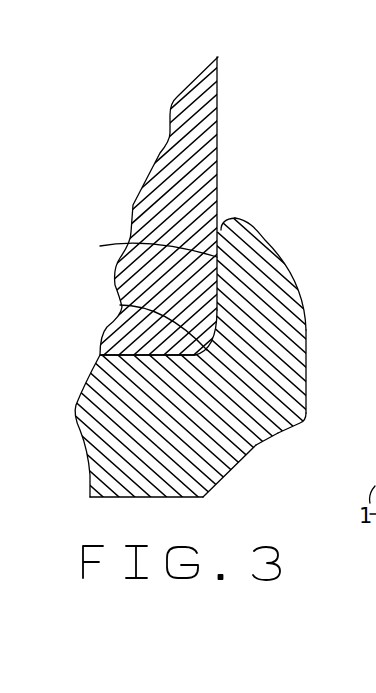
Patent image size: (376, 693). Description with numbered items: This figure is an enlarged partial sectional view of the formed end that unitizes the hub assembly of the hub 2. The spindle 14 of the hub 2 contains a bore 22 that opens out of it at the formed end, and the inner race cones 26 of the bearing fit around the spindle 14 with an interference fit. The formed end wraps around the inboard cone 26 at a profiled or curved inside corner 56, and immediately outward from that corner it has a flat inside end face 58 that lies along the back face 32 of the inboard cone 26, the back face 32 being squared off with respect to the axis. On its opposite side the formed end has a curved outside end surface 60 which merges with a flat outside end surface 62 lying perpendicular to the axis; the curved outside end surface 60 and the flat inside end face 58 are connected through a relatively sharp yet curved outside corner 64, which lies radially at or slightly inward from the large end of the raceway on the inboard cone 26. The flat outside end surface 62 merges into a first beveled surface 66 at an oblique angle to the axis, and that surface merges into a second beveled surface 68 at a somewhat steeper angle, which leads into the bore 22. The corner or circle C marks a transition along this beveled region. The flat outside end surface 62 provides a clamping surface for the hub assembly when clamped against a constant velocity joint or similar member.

The hub 2 is at (79, 380).
The spindle 14 is at (88, 420).
The bore 22 is at (118, 497).
The cone 26 is at (158, 190).
The back face 32 is at (218, 122).
The inside corner 56 is at (120, 305).
The flat inside end face 58 is at (141, 246).
The curved outside end surface 60 is at (272, 243).
The flat outside end surface 62 is at (307, 349).
The outside corner 64 is at (226, 218).
The first beveled surface 66 is at (278, 433).
The circle of transition C is at (256, 447).
The second beveled surface 68 is at (217, 481).